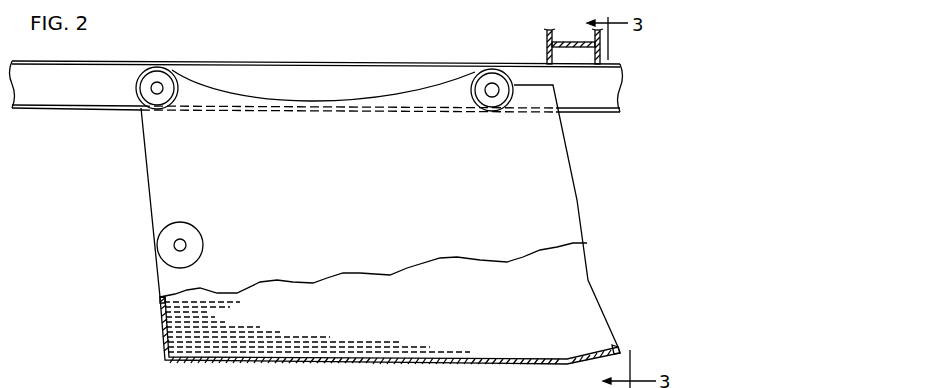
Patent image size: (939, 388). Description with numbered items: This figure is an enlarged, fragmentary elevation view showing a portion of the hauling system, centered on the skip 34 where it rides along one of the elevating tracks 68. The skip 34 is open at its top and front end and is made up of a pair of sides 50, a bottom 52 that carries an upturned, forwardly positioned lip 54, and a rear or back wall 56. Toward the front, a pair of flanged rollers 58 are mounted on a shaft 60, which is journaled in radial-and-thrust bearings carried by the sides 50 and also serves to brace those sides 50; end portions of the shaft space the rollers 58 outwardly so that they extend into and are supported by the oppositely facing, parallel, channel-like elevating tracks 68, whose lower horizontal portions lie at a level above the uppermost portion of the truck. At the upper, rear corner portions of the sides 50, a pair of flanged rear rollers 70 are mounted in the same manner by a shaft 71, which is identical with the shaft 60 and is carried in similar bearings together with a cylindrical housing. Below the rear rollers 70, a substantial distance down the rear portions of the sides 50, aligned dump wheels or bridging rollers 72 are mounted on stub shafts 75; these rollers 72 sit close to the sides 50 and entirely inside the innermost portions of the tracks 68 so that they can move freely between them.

The skip 34 is at (145, 183).
The sides 50 is at (578, 238).
The bottom 52 is at (449, 364).
The lip 54 is at (619, 347).
The rear wall 56 is at (160, 298).
The flanged rollers 58 is at (487, 71).
The shaft 60 is at (496, 86).
The elevating tracks 68 is at (44, 110).
The rear rollers 70 is at (152, 68).
The shaft 71 is at (160, 86).
The dump wheels 72 is at (174, 246).
The stub shafts 75 is at (177, 251).